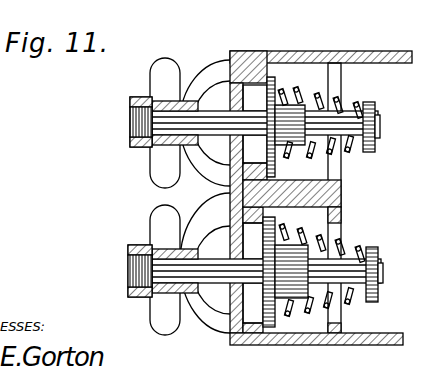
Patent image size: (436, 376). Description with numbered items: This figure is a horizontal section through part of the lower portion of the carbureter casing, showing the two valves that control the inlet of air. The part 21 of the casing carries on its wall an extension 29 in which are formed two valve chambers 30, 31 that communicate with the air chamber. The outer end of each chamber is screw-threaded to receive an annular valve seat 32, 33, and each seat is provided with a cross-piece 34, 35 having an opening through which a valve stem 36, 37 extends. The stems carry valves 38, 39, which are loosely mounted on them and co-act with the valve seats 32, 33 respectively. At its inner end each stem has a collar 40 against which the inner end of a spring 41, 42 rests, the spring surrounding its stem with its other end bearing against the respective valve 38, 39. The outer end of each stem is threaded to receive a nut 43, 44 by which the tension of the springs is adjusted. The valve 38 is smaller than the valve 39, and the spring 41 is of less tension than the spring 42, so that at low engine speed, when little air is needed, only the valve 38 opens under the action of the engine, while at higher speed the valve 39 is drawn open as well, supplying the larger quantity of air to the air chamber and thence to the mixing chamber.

The part of the casing 21 is at (386, 52).
The extension 29 is at (310, 52).
The valve chamber 30 is at (294, 144).
The valve chamber 31 is at (286, 272).
The valve seat 32 is at (254, 51).
The valve seat 33 is at (233, 318).
The cross-piece 34 is at (201, 78).
The cross-piece 35 is at (237, 108).
The valve stem 36 is at (130, 133).
The valve stem 37 is at (152, 297).
The valve 38 is at (277, 80).
The valve 39 is at (292, 345).
The collar 40 is at (373, 110).
The spring 41 is at (318, 152).
The spring 42 is at (327, 303).
The nut 43 is at (158, 215).
The nut 44 is at (137, 97).